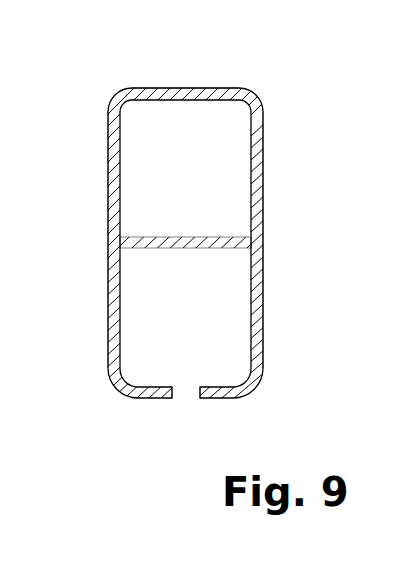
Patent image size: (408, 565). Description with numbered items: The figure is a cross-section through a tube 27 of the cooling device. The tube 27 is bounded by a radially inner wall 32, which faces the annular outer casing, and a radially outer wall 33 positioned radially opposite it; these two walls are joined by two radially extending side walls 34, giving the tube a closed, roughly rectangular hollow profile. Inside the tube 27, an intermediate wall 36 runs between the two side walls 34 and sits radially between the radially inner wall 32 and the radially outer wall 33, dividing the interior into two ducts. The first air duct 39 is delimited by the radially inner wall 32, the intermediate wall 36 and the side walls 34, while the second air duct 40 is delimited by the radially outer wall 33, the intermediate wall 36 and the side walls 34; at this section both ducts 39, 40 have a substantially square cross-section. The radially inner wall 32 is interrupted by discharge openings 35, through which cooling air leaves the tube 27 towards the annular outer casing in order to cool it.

The tube 27 is at (257, 62).
The radially outer wall 33 is at (185, 88).
The side walls 34 is at (108, 160).
The intermediate wall 36 is at (172, 244).
The discharge openings 35 is at (185, 395).
The radially inner wall 32 is at (208, 398).
The second air duct 40 is at (201, 180).
The first air duct 39 is at (201, 335).